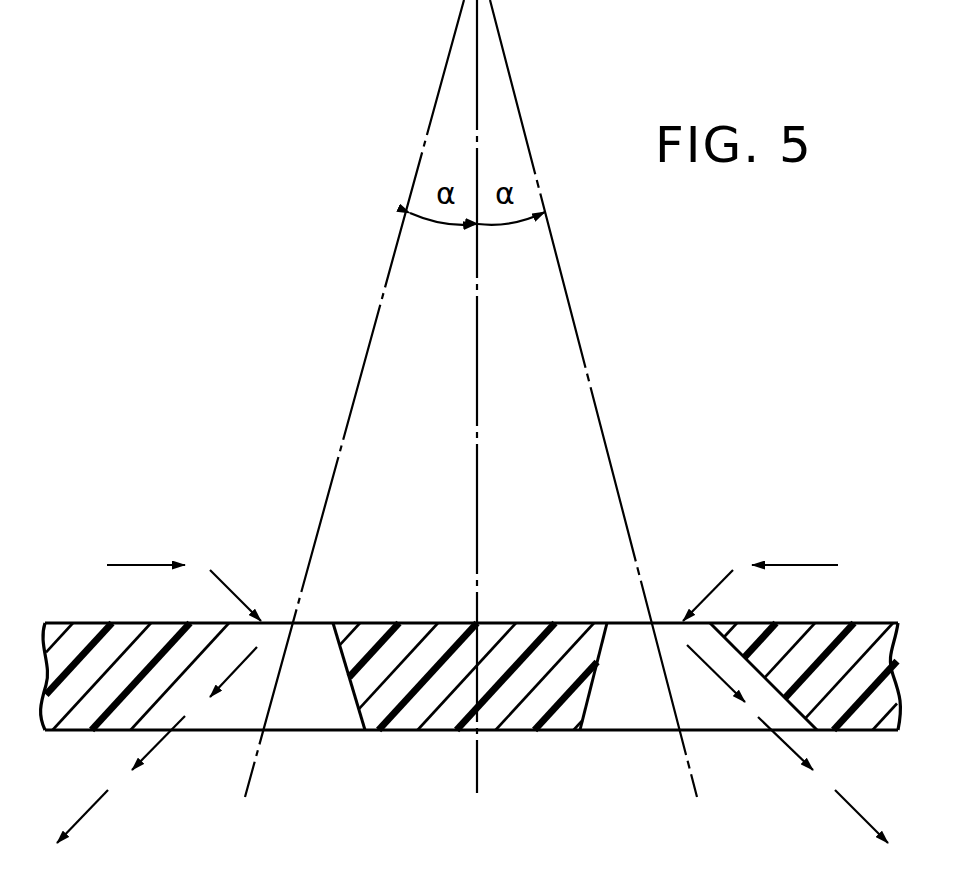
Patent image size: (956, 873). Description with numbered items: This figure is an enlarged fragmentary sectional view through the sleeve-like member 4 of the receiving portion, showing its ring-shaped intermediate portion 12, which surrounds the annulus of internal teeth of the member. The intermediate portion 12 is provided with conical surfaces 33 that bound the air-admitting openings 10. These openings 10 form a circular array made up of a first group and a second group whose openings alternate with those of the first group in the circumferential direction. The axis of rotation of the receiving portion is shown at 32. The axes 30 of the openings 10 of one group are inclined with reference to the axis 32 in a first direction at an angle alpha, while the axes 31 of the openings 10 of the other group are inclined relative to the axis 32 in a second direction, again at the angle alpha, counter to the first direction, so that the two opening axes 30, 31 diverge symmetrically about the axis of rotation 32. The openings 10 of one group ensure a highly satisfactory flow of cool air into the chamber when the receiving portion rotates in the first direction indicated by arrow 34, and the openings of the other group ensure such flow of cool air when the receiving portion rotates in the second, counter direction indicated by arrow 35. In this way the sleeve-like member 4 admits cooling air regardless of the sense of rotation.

The sleeve-like member 4 is at (520, 621).
The air-admitting openings 10 is at (227, 717).
The intermediate portion 12 is at (430, 723).
The axes of openings of one group 30 is at (338, 457).
The axes of openings of the other group 31 is at (694, 762).
The axis of rotation 32 is at (480, 372).
The conical surfaces 33 is at (354, 697).
The arrow indicating first direction of rotation 34 is at (135, 565).
The arrow indicating second direction of rotation 35 is at (820, 565).